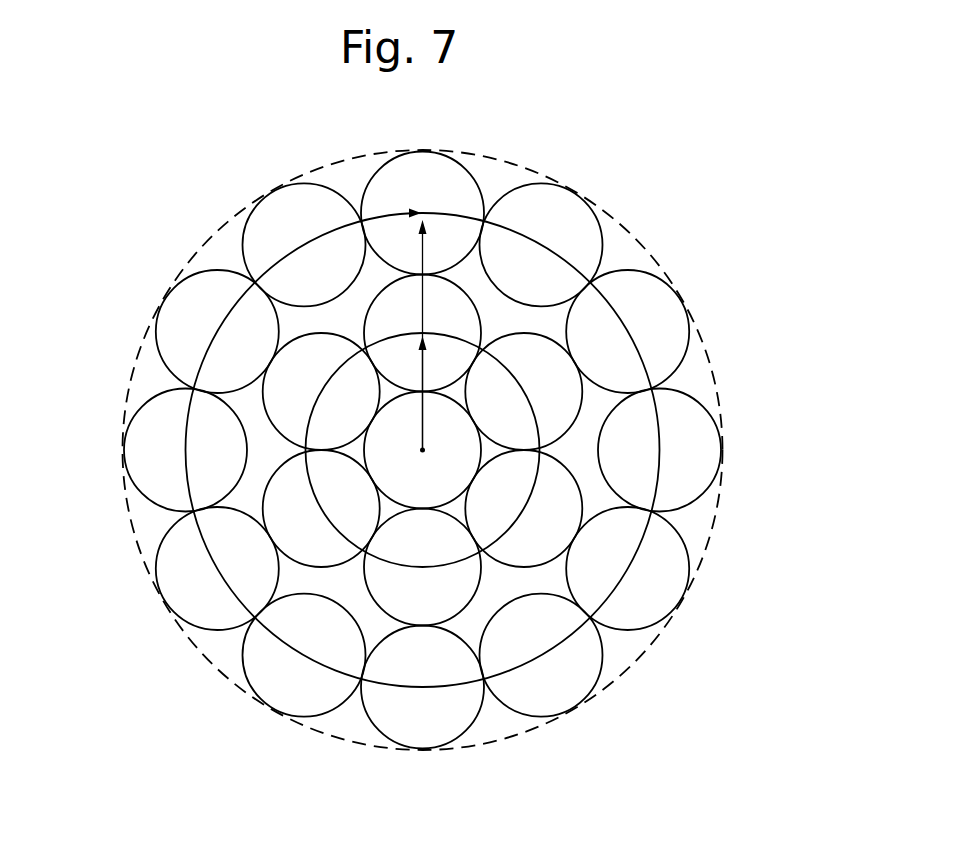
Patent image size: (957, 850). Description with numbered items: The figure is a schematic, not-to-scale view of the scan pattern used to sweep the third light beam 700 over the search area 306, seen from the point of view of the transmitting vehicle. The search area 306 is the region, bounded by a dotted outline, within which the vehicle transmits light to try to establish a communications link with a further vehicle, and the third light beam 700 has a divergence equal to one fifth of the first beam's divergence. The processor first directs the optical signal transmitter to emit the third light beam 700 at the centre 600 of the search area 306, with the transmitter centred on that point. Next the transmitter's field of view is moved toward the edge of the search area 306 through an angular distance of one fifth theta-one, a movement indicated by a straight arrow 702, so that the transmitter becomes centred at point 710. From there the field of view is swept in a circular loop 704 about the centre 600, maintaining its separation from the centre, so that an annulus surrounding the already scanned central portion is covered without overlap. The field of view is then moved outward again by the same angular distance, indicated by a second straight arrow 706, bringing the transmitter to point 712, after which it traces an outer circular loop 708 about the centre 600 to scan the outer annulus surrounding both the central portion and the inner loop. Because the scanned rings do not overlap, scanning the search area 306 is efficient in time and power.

The search area 306 is at (638, 658).
The centre of the search area 600 is at (422, 450).
The third light beam 700 is at (243, 240).
The first movement arrow 702 is at (423, 375).
The circular loop 704 is at (523, 512).
The second movement arrow 706 is at (423, 245).
The outer circular loop 708 is at (660, 450).
The point 710 is at (421, 333).
The point 712 is at (422, 213).